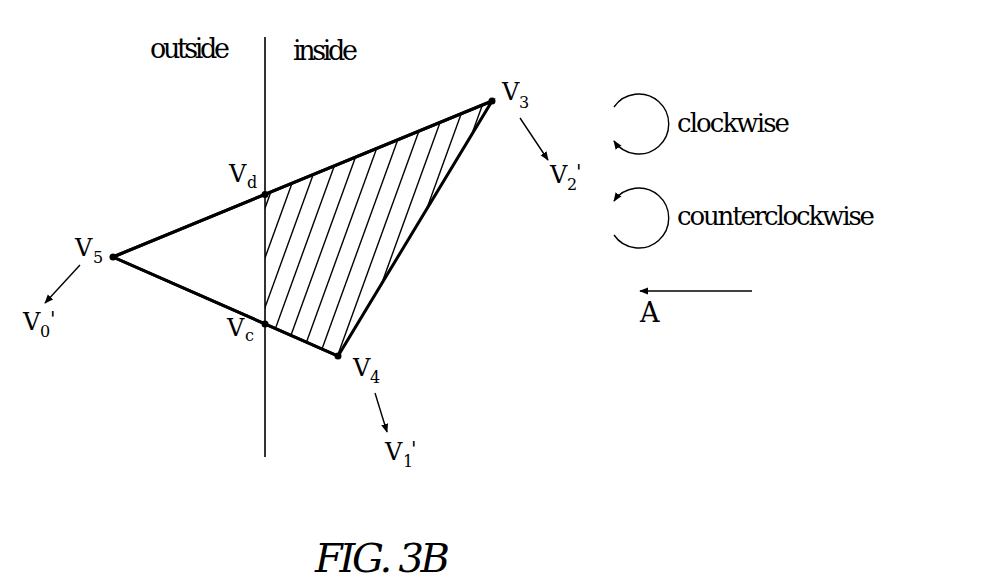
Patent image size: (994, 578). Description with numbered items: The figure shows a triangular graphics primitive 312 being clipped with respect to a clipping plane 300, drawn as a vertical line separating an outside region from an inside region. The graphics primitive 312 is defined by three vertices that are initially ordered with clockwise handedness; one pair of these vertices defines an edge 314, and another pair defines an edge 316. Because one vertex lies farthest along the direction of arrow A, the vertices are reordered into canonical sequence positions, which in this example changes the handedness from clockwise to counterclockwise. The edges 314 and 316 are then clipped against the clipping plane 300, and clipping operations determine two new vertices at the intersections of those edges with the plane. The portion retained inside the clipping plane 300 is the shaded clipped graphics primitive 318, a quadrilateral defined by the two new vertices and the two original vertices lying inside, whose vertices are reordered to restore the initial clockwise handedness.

The clipping plane 300 is at (207, 255).
The graphics primitive 312 is at (293, 229).
The edge 314 is at (220, 310).
The edge 316 is at (302, 171).
The clipped graphics primitive 318 is at (357, 227).